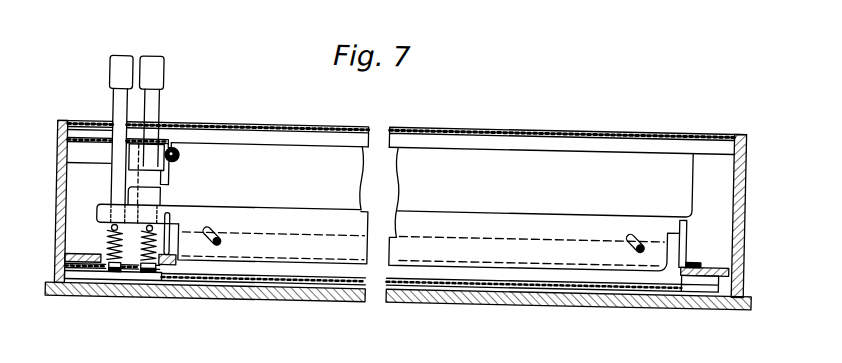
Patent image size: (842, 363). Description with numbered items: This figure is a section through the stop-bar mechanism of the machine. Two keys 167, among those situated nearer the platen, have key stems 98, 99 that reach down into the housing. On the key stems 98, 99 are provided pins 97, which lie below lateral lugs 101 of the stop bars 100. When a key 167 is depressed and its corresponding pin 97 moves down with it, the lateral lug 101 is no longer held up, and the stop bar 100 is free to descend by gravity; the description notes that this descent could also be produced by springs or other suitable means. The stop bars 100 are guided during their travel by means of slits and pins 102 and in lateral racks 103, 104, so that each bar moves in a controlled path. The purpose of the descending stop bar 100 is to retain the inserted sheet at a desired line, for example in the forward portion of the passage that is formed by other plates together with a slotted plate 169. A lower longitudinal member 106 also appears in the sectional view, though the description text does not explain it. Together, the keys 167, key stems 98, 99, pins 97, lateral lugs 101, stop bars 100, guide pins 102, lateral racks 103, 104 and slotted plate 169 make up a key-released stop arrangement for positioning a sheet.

The pin 97 is at (107, 227).
The key stem 98 is at (112, 108).
The key stem 99 is at (157, 105).
The stop bar 100 is at (447, 211).
The lateral lug 101 is at (96, 210).
The pin 102 is at (219, 236).
The lateral rack 103 is at (172, 252).
The lateral rack 104 is at (690, 242).
The bottom guide beam 106 is at (525, 273).
The key 167 is at (147, 63).
The slotted plate 169 is at (725, 265).